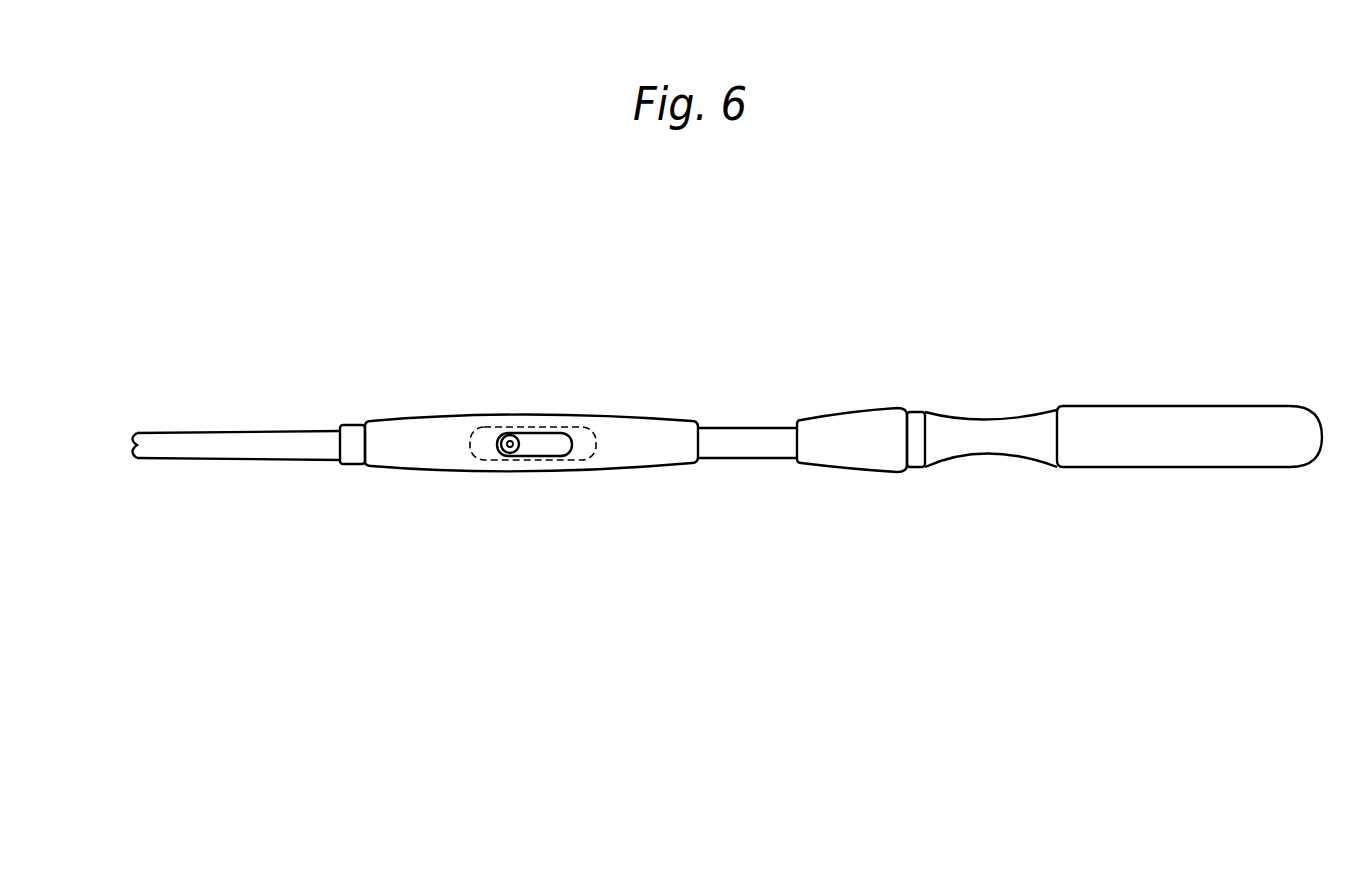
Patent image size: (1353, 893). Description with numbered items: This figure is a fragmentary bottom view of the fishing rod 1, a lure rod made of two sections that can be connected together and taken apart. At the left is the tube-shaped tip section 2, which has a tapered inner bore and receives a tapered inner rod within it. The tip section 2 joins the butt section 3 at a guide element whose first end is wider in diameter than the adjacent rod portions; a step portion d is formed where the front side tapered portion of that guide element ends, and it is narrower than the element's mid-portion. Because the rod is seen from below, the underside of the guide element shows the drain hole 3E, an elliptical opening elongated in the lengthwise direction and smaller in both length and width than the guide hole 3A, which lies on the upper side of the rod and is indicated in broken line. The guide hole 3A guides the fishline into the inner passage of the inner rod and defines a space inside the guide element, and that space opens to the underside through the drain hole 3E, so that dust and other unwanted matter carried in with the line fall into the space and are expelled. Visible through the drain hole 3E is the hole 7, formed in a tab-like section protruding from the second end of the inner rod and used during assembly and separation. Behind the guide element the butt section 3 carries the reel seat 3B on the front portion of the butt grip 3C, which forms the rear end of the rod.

The fishing rod 1 is at (547, 275).
The tip section 2 is at (205, 428).
The step portion d is at (354, 412).
The butt section 3 is at (685, 420).
The guide hole 3A is at (598, 466).
The reel seat 3B is at (988, 420).
The butt grip 3C is at (1192, 425).
The drain hole 3E is at (540, 452).
The hole 7 is at (513, 438).